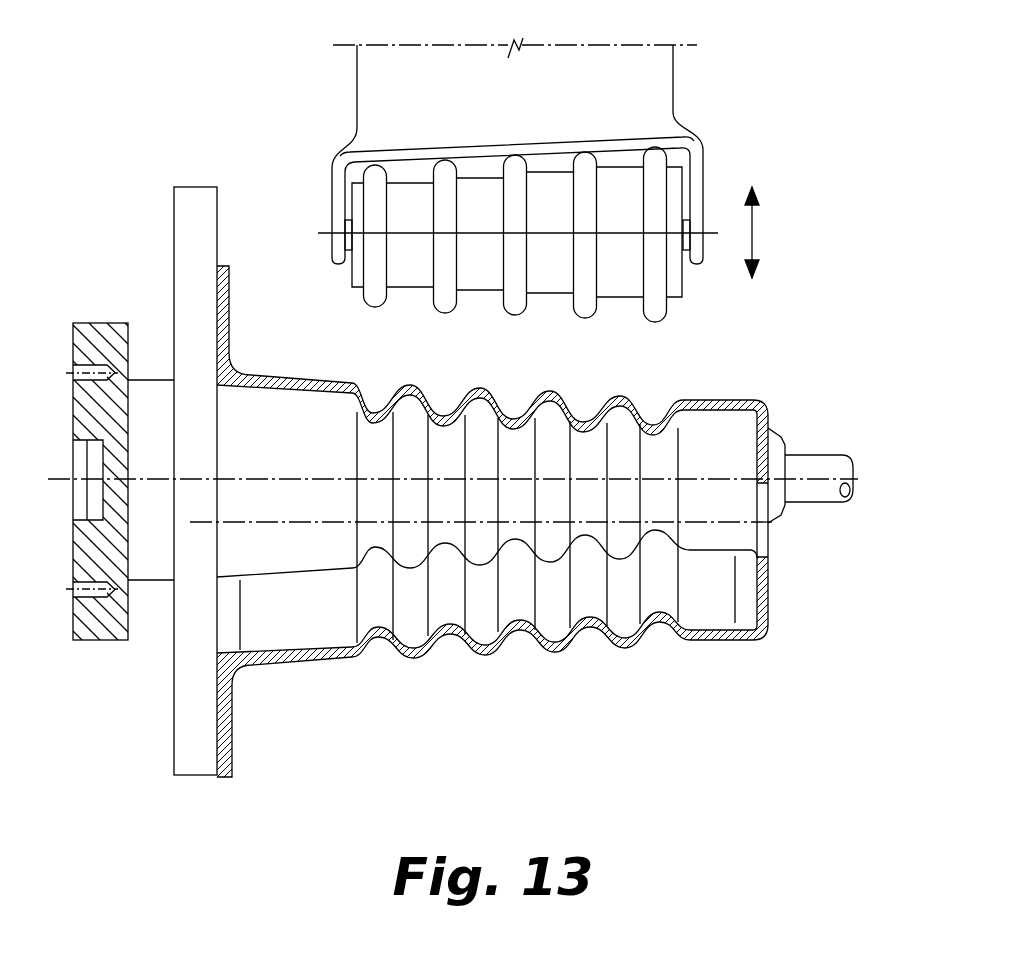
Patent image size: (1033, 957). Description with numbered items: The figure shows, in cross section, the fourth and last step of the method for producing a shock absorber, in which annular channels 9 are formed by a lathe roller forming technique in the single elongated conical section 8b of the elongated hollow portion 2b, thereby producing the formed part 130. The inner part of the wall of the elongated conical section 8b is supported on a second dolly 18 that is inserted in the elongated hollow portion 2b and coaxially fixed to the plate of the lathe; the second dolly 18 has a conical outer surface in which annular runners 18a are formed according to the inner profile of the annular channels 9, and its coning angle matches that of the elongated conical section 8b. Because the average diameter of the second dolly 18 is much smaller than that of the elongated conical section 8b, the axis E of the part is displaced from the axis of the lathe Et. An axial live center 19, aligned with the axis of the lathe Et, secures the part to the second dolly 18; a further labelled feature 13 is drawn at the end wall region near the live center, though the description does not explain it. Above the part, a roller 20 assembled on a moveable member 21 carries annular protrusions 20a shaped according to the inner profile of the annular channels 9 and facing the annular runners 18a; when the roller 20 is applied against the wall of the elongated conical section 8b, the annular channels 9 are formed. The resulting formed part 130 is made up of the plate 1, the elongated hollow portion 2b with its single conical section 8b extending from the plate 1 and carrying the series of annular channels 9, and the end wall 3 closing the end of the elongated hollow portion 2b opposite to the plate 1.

The plate 1 is at (228, 317).
The moveable member 21 is at (662, 95).
The roller 20 is at (517, 263).
The annular protrusions 20a is at (515, 308).
The second dolly 18 is at (774, 505).
The axial live center 19 is at (778, 445).
The opening 13 is at (763, 537).
The end wall 3 is at (811, 538).
The elongated conical section 8b is at (327, 667).
The annular runners 18a is at (448, 542).
The annular channels 9 is at (518, 630).
The formed part 130 is at (541, 556).
The elongated hollow portion 2b is at (541, 556).
The axis of the lathe Et is at (273, 480).
The axis of the partially formed part E is at (287, 522).